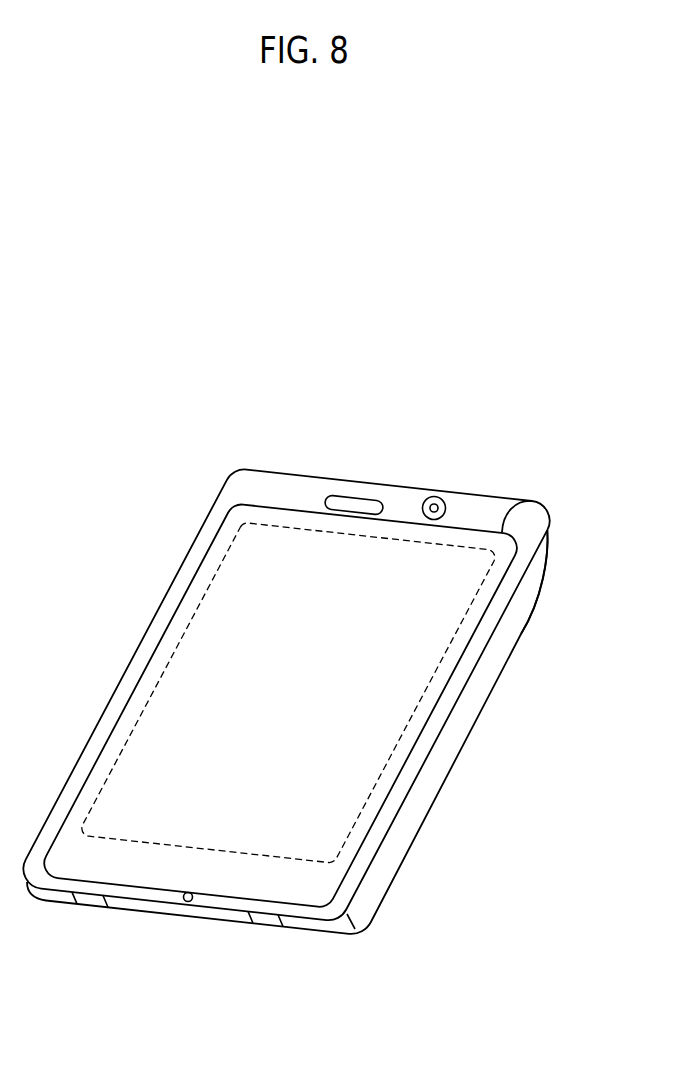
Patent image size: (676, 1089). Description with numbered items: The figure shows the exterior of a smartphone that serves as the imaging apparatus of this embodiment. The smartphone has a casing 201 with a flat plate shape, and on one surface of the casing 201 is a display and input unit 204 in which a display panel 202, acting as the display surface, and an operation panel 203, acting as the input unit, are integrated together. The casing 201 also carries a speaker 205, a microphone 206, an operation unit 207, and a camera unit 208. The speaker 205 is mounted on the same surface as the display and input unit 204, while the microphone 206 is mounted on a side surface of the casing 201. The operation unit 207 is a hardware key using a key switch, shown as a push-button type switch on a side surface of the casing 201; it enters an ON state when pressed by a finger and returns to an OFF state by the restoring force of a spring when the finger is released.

The casing 201 is at (238, 482).
The display panel 202 is at (464, 546).
The operation panel 203 is at (528, 500).
The display and input unit 204 is at (593, 420).
The speaker 205 is at (354, 497).
The microphone 206 is at (188, 901).
The operation unit 207 is at (97, 903).
The camera unit 208 is at (432, 497).